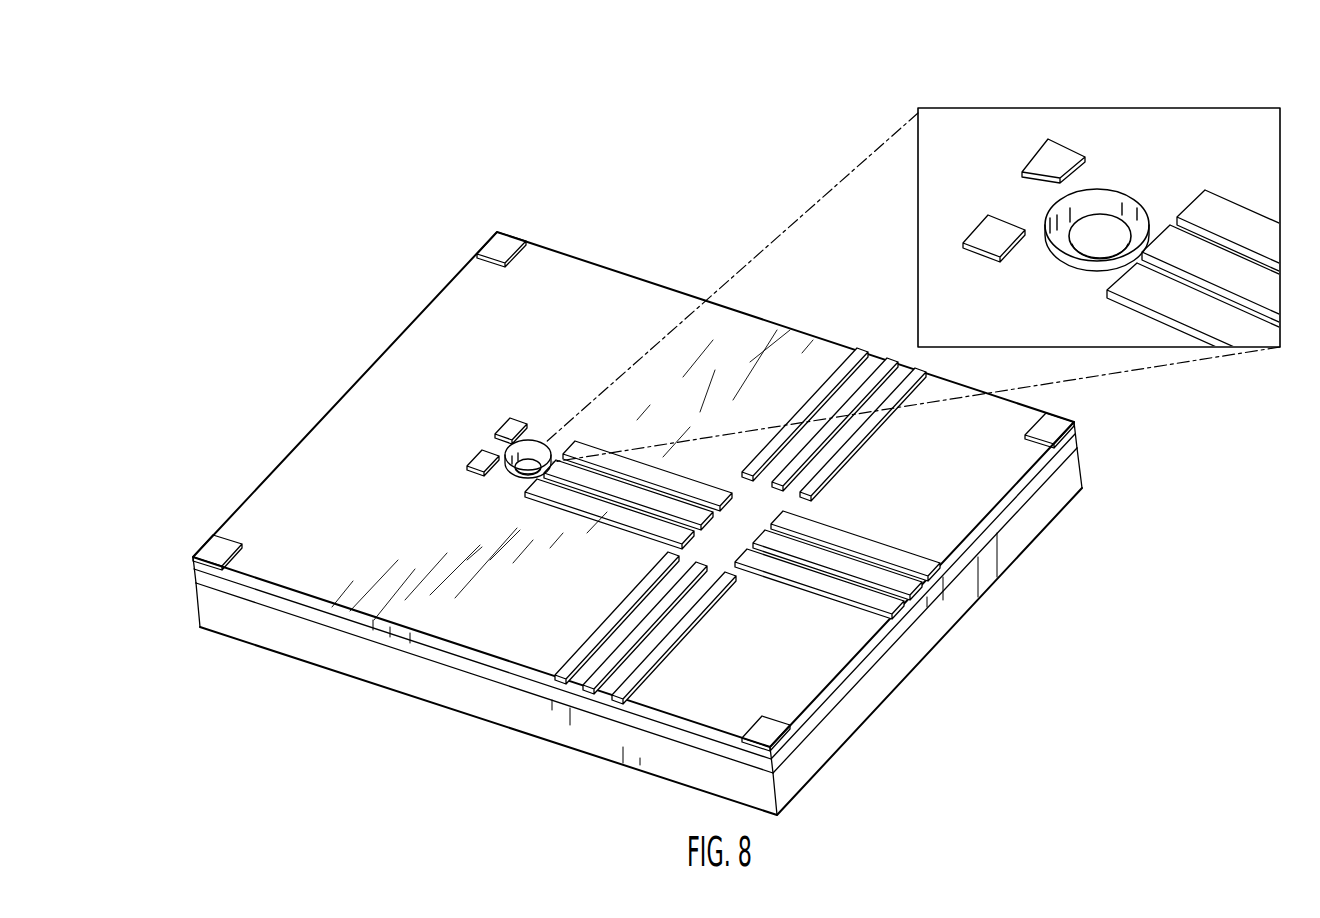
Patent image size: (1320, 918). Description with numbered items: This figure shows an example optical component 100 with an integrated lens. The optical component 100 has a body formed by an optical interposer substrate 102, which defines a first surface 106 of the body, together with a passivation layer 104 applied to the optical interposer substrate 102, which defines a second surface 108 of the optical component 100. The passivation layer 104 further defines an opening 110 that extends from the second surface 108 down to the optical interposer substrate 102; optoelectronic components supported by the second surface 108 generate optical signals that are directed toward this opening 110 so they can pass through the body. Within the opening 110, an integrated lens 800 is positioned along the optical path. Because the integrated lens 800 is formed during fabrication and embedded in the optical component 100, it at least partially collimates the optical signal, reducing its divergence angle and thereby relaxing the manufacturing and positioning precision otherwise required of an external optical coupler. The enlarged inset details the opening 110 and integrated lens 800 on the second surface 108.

The optical component 100 is at (222, 192).
The optical interposer substrate 102 is at (862, 705).
The passivation layer 104 is at (259, 477).
The first surface 106 is at (537, 742).
The second surface 108 is at (347, 431).
The opening 110 is at (538, 431).
The integrated lens 800 is at (1110, 232).